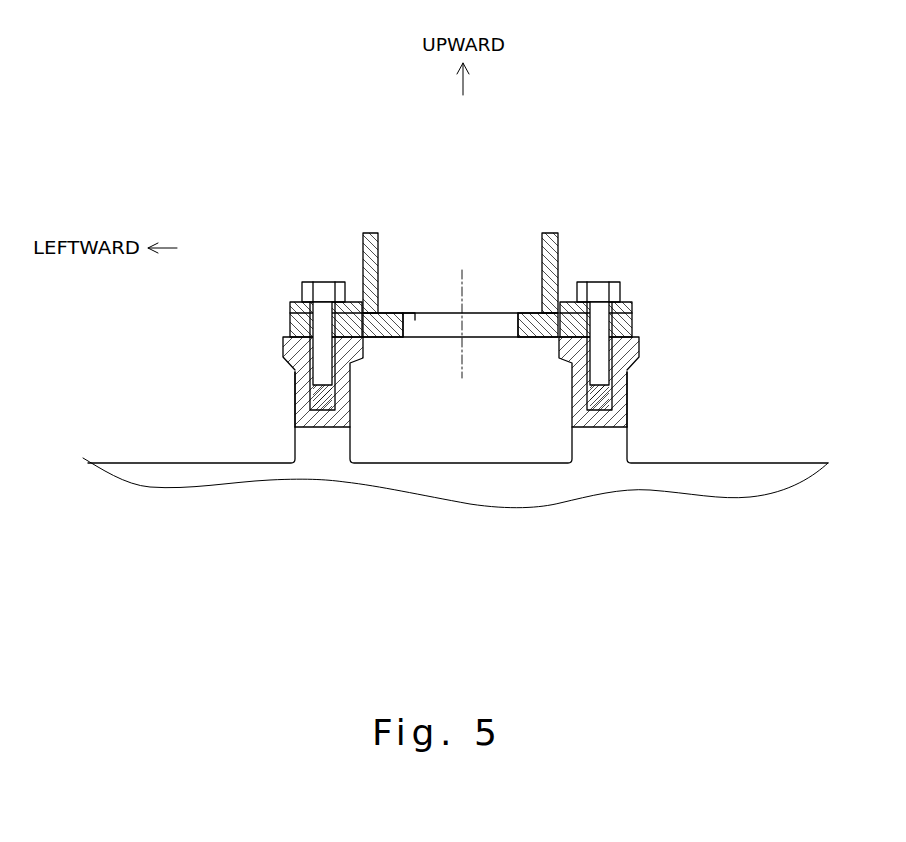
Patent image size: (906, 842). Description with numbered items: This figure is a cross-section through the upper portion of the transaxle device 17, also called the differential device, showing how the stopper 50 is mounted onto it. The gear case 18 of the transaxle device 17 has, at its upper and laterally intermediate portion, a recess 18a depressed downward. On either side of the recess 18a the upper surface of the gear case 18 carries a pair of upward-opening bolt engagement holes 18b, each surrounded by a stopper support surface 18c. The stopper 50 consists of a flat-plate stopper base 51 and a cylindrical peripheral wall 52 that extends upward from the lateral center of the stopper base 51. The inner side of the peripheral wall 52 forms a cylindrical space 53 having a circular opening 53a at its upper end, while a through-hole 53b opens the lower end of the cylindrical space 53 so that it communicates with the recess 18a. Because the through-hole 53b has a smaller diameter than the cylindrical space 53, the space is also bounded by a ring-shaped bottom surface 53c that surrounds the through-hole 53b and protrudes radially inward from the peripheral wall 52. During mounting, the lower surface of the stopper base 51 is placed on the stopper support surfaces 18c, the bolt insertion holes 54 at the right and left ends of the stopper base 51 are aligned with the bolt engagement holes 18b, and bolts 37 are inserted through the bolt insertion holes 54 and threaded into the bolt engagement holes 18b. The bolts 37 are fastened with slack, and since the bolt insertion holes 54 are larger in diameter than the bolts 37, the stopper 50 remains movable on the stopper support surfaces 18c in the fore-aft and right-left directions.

The transaxle device 17 is at (268, 491).
The gear case 18 is at (127, 462).
The recess 18a is at (420, 427).
The bolt engagement holes 18b is at (296, 391).
The stopper support surfaces 18c is at (283, 337).
The bolts 37 is at (301, 293).
The stopper 50 is at (363, 222).
The stopper base 51 is at (446, 221).
The peripheral wall 52 is at (547, 234).
The cylindrical space 53 is at (433, 221).
The circular opening 53a is at (541, 237).
The through-hole 53b is at (404, 314).
The ring-shaped bottom surface 53c is at (578, 338).
The bolt insertion holes 54 is at (290, 311).